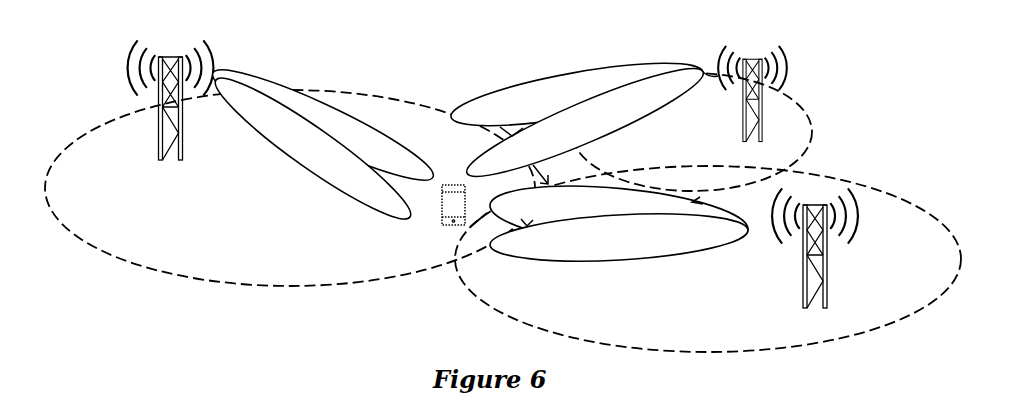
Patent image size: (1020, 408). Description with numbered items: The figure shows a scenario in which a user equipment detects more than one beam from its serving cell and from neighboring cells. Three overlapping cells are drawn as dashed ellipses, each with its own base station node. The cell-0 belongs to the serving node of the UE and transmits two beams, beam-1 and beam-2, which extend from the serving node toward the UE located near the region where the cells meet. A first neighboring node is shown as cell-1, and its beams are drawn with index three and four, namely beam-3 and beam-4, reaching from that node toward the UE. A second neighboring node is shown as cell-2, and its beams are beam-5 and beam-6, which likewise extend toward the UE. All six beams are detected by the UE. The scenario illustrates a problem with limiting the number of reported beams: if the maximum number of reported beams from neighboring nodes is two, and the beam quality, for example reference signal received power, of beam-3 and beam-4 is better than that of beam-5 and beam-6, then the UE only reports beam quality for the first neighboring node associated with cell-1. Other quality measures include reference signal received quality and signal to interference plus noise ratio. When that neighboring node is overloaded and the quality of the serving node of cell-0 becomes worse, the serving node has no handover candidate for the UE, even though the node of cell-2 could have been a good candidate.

The cell 0 cell-0 is at (290, 163).
The cell 1 cell-1 is at (708, 261).
The cell 2 cell-2 is at (692, 106).
The beam 1 beam-1 is at (322, 125).
The beam 2 beam-2 is at (312, 149).
The beam 3 beam-3 is at (619, 238).
The beam 4 beam-4 is at (619, 217).
The beam 5 beam-5 is at (585, 123).
The beam 6 beam-6 is at (582, 94).